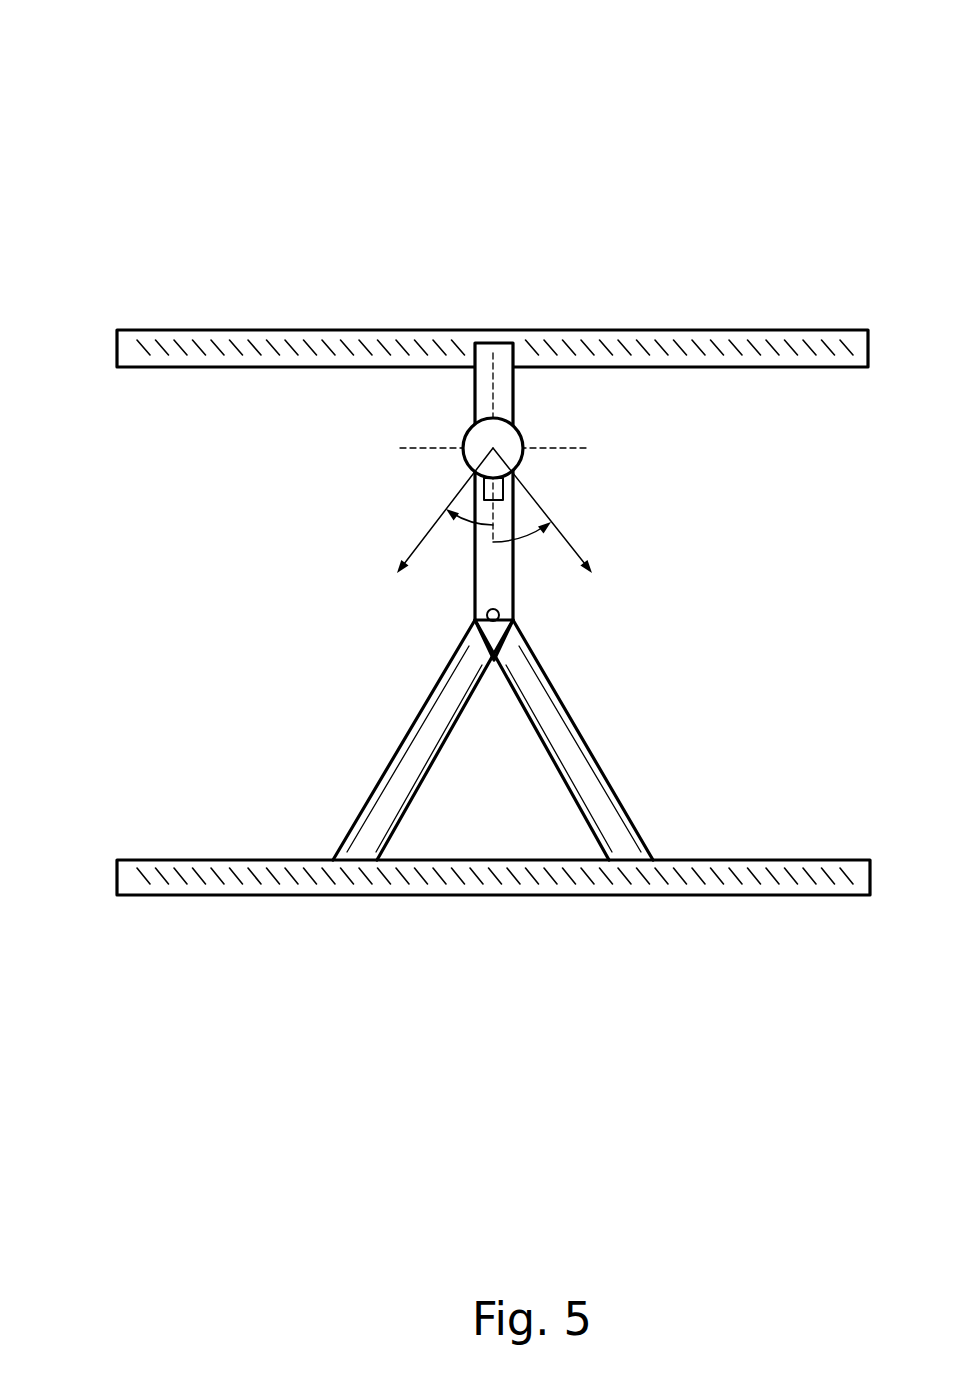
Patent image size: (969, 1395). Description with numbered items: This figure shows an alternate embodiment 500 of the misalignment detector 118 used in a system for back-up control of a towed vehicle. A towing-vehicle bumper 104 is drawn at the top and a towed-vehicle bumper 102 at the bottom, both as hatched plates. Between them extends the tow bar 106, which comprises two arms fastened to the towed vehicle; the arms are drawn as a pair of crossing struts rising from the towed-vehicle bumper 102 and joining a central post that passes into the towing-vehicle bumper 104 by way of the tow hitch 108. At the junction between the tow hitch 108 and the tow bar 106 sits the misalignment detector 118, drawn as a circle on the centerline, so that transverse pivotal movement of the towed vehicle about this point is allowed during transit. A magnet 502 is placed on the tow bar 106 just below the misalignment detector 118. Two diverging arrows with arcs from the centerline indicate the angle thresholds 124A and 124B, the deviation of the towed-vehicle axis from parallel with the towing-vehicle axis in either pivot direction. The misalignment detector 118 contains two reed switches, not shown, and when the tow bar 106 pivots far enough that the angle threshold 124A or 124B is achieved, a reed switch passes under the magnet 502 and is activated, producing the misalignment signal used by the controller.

The cymbal stand assembly 500 is at (84, 61).
The towing-vehicle bumper 104 is at (708, 368).
The towed-vehicle bumper 102 is at (708, 897).
The tow hitch 108 is at (476, 401).
The misalignment detector 118 is at (520, 427).
The magnet 502 is at (503, 483).
The relative angle 124A is at (463, 522).
The relative angle 124B is at (533, 537).
The tow bar 106 is at (492, 582).